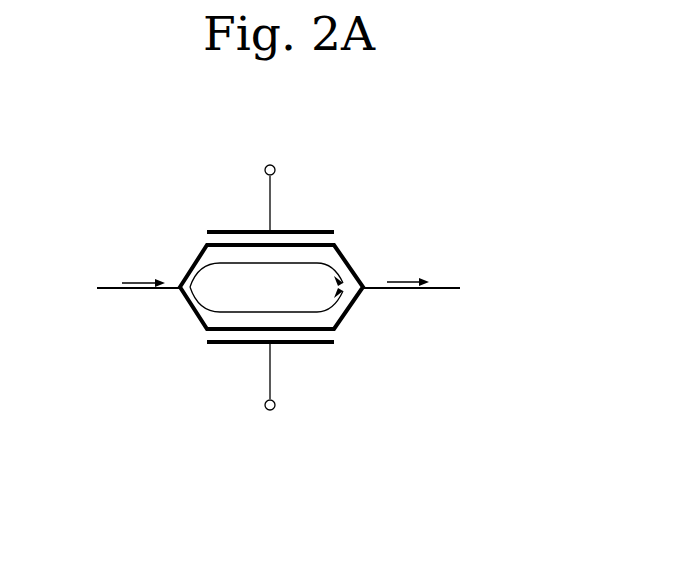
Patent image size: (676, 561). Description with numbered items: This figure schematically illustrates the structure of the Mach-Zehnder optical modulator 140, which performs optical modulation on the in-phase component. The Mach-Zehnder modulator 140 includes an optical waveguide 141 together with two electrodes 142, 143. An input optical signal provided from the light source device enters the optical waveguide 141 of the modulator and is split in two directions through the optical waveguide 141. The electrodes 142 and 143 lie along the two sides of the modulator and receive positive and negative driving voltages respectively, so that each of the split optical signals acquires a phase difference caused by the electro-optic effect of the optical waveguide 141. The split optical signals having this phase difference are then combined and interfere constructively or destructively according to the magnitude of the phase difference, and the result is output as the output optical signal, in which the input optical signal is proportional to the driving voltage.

The Mach-Zehnder optical modulator 140 is at (468, 150).
The optical waveguide 141 is at (138, 291).
The electrode 142 is at (327, 228).
The electrode 143 is at (325, 345).